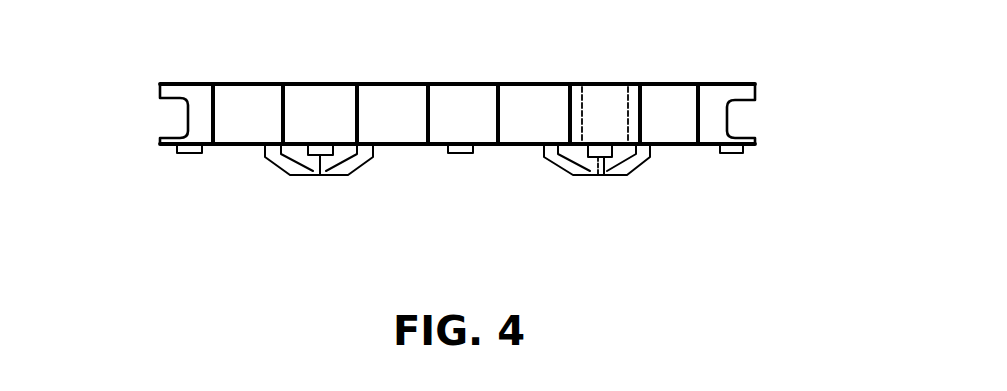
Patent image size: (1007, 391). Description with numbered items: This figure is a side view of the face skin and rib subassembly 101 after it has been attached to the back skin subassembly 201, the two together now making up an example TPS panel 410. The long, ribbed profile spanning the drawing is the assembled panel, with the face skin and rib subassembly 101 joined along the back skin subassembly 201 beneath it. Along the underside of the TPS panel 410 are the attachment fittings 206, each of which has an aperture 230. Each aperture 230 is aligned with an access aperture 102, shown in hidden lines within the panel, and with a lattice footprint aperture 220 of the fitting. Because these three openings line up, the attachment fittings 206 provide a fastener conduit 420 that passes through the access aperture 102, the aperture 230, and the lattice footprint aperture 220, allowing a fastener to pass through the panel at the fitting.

The TPS panel 410 is at (253, 44).
The face skin and rib subassembly 101 is at (154, 121).
The access aperture 102 is at (604, 85).
The back skin subassembly 201 is at (242, 161).
The fastener conduit 420 is at (598, 120).
The attachment fitting 206 is at (648, 162).
The lattice footprint aperture 220 is at (614, 176).
The aperture 230 is at (601, 177).